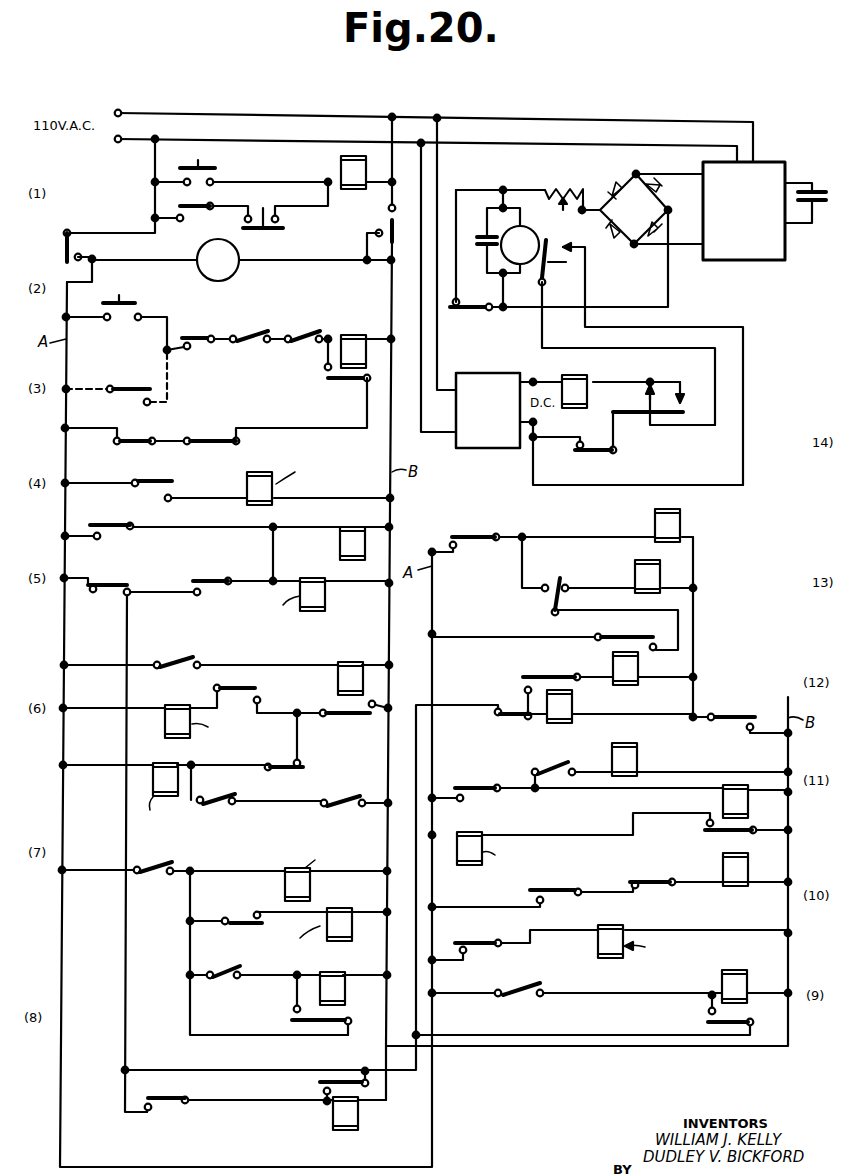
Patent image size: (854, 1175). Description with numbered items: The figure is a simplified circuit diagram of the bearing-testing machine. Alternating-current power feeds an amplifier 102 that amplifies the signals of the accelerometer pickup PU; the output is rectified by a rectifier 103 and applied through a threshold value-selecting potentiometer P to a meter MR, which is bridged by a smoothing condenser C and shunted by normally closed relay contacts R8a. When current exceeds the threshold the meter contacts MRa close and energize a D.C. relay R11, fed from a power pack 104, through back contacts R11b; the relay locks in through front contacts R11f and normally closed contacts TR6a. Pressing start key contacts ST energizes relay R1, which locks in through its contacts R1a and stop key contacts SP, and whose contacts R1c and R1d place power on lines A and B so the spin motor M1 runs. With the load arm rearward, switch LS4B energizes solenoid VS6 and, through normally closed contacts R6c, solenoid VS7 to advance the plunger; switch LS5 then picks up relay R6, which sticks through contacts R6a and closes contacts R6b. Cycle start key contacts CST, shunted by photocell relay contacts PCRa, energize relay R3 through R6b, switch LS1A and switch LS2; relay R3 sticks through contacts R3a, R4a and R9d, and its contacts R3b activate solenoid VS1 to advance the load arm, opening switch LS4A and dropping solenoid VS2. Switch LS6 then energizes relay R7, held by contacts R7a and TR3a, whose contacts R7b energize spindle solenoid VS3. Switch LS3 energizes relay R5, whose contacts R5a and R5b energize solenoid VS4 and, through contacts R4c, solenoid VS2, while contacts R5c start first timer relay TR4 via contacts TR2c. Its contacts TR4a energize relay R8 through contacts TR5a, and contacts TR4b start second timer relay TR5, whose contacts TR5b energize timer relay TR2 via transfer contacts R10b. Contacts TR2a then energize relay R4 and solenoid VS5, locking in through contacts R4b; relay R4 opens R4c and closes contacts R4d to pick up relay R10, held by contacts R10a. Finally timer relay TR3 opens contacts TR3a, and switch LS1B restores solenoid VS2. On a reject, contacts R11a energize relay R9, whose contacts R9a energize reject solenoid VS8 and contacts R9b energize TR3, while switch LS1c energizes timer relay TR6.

The amplifier 102 is at (778, 172).
The rectifier 103 is at (628, 250).
The power pack 104 is at (487, 442).
The accelerometer pickup PU is at (812, 232).
The threshold value-selecting potentiometer P is at (562, 186).
The smoothing condenser C is at (478, 238).
The meter MR is at (520, 245).
The meter contacts MRa is at (641, 362).
The spin motor M1 is at (241, 260).
The start key contacts ST is at (216, 172).
The stop key contacts SP is at (270, 206).
The cycle start key contacts CST is at (153, 296).
The relay R1 is at (341, 162).
The relay contacts R1a is at (202, 203).
The relay contacts R1c is at (74, 253).
The relay contacts R1d is at (392, 224).
The cycle start relay R3 is at (352, 329).
The relay contacts R3a is at (348, 382).
The relay contacts R3b is at (478, 938).
The relay R4 is at (348, 527).
The relay contacts R4a is at (210, 440).
The relay contacts R4b is at (211, 580).
The relay contacts R4c is at (306, 765).
The relay contacts R4d is at (172, 1094).
The relay R5 is at (338, 681).
The relay contacts R5a is at (237, 678).
The relay contacts R5b is at (368, 716).
The relay contacts R5c is at (735, 714).
The relay R6 is at (345, 985).
The relay contacts R6a is at (292, 1020).
The relay contacts R6b is at (208, 333).
The relay contacts R6c is at (244, 922).
The relay R7 is at (748, 978).
The relay contacts R7a is at (708, 1022).
The relay contacts R7b is at (158, 473).
The relay R8 is at (748, 870).
The relay contacts R8a is at (462, 310).
The relay R9 is at (748, 800).
The relay contacts R9a is at (705, 832).
The relay contacts R9b is at (480, 535).
The relay contacts R9d is at (145, 430).
The relay R10 is at (320, 1114).
The relay contacts R10a is at (320, 1082).
The transfer relay contacts R10b is at (552, 598).
The relay R11 is at (588, 375).
The relay contacts R11a is at (478, 783).
The back contacts R11b is at (646, 397).
The front contacts R11f is at (682, 408).
The photocell relay contacts PCRa is at (140, 378).
The switch LS1A is at (258, 328).
The switch LS1B is at (343, 797).
The switch LS1C LS1c is at (556, 760).
The switch LS2 is at (306, 333).
The switch LS3 is at (178, 652).
The switch LS4A is at (224, 794).
The switch LS4B is at (155, 872).
The switch LS5 is at (222, 960).
The switch LS6 is at (512, 980).
The valve solenoid VS1 is at (622, 926).
The outer thrust left solenoid VS2 is at (165, 762).
The spindle solenoid VS3 is at (247, 486).
The valve solenoid VS4 is at (185, 692).
The outer thrust right solenoid VS5 is at (315, 570).
The valve solenoid VS6 is at (285, 866).
The valve solenoid VS7 is at (340, 908).
The reject solenoid VS8 is at (460, 872).
The timer relay TR2 is at (635, 578).
The timer relay contacts TR2a is at (120, 515).
The timer relay contacts TR2c is at (510, 720).
The cycle ending timer relay TR3 is at (682, 534).
The timer relay contacts TR3a is at (125, 577).
The first timer relay TR4 is at (573, 710).
The timer relay contacts TR4a is at (562, 882).
The timer relay contacts TR4b is at (540, 676).
The second timer relay TR5 is at (613, 668).
The timer relay contacts TR5a is at (655, 873).
The timer relay contacts TR5b is at (624, 628).
The timer relay TR6 is at (637, 758).
The timer relay contacts TR6a is at (585, 455).